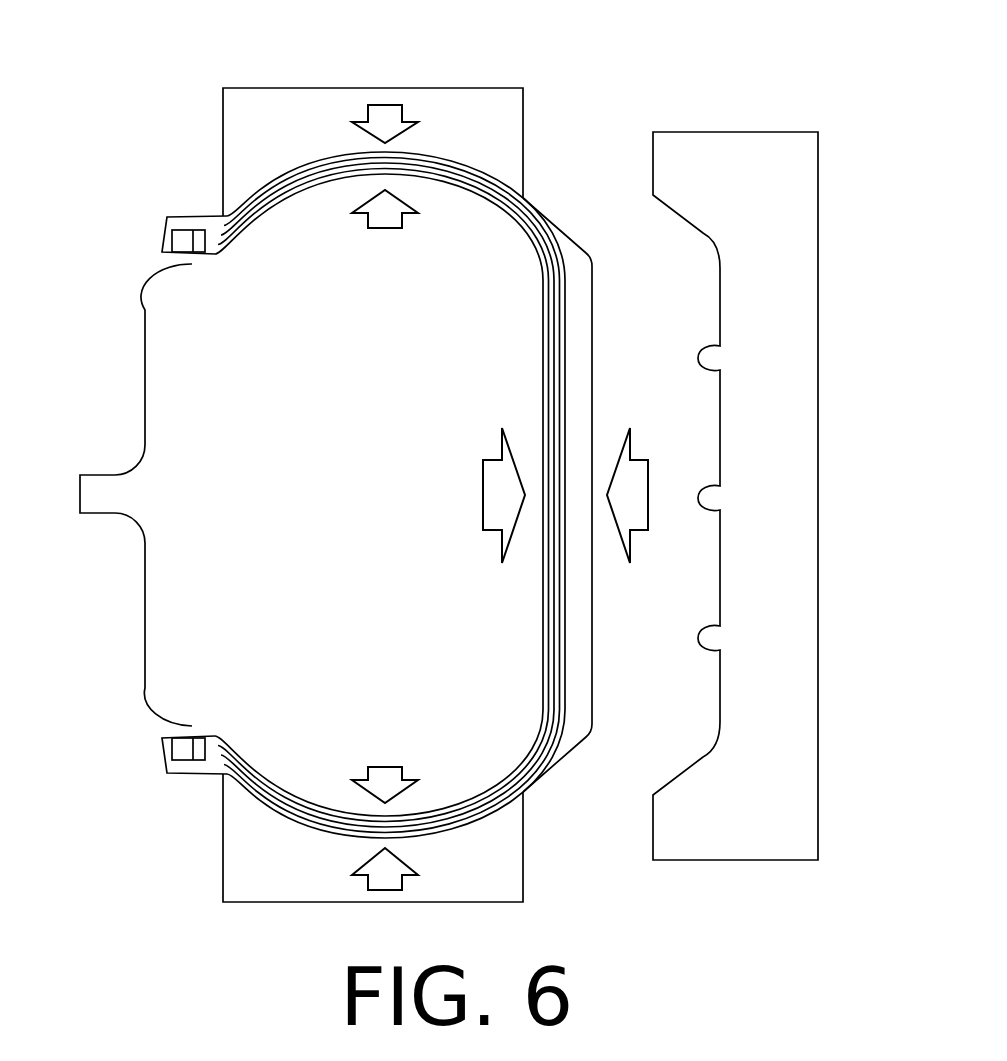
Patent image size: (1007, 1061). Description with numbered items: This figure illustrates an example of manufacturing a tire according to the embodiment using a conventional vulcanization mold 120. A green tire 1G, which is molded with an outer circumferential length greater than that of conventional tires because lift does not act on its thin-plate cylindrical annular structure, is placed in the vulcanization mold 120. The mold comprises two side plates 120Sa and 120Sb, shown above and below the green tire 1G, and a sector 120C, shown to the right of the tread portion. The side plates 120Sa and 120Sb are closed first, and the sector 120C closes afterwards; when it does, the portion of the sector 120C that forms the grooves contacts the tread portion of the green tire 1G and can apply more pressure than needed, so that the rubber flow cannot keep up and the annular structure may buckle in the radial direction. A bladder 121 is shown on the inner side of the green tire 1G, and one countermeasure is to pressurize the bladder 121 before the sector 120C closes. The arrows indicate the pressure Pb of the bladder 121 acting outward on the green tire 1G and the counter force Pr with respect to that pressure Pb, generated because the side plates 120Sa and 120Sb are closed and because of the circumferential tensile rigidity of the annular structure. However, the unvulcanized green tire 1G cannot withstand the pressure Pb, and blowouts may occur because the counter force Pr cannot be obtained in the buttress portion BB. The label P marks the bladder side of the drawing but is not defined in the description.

The green tire 1G is at (190, 204).
The vulcanization mold 120 is at (634, 67).
The side plate 120Sa is at (523, 133).
The side plate 120Sb is at (523, 862).
The sector 120C is at (757, 133).
The bladder 121 is at (145, 650).
The pressure medium inlet P is at (67, 489).
The buttress portion BB is at (530, 278).
The counter force Pr is at (511, 497).
The pressure Pb is at (438, 496).